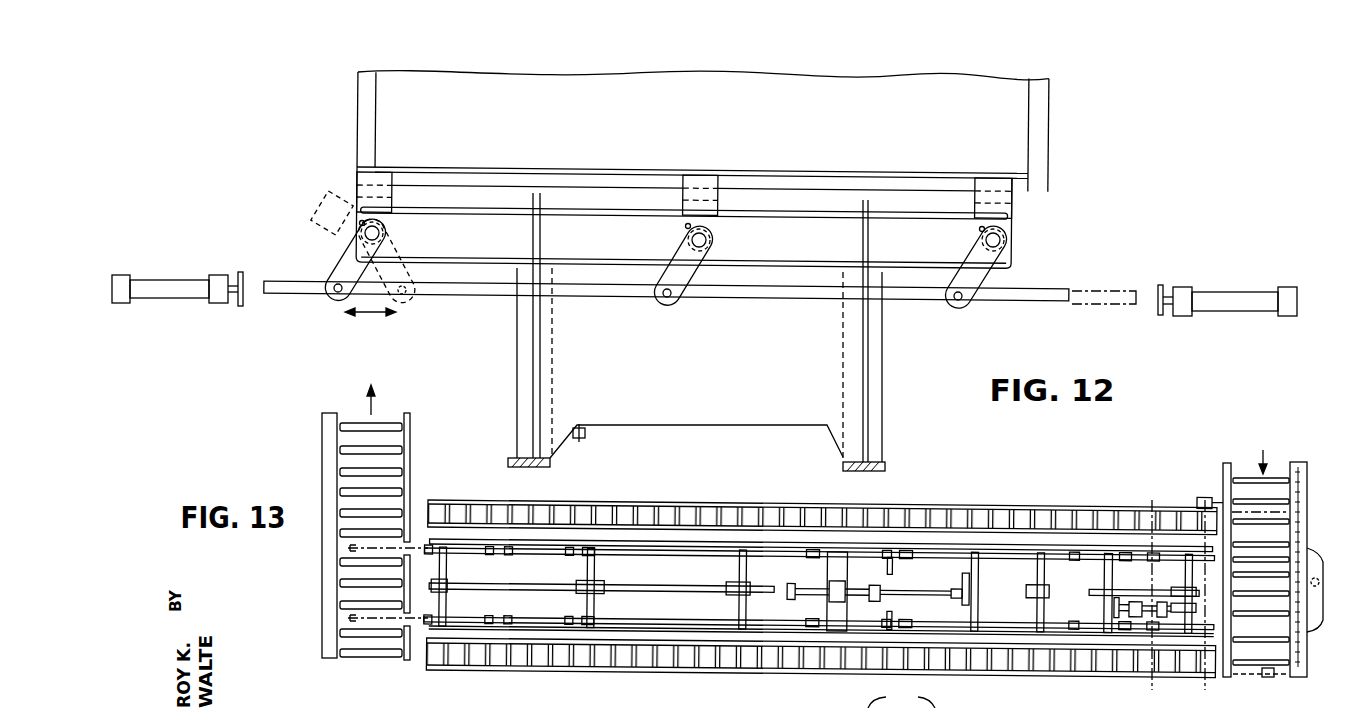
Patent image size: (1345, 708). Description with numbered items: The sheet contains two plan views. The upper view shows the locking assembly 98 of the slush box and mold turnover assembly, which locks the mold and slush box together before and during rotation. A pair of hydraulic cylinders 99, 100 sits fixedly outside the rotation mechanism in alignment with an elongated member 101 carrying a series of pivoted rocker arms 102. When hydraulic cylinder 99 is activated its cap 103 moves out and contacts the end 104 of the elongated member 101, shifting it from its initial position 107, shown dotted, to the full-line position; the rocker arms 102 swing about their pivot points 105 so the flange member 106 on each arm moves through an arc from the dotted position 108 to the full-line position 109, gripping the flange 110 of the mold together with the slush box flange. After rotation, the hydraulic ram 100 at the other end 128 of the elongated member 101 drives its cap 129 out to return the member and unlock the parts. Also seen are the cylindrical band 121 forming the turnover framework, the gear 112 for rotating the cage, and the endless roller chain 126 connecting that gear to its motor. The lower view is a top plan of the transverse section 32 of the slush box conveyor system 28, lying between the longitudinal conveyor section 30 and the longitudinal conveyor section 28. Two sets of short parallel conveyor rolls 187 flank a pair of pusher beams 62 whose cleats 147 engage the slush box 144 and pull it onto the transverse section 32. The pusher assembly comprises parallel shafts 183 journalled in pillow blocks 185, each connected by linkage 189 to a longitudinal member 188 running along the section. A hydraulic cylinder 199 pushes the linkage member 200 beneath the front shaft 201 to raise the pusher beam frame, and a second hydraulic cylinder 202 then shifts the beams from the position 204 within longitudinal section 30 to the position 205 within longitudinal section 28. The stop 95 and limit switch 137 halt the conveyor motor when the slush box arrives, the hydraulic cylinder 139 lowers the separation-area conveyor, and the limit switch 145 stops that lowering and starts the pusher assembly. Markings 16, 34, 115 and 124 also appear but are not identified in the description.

In FIG. 12, the section line 16- 16 is at (672, 195).
In FIG. 13, the slush box conveyor system 28 is at (408, 425).
In FIG. 13, the longitudinal conveyor section 30 is at (1242, 472).
In FIG. 13, the transverse conveyor section 32 is at (1008, 508).
In FIG. 13, the outlet conveyor end plate 34 is at (1277, 486).
In FIG. 13, the pusher beams 62 is at (500, 554).
In FIG. 13, the stop 95 is at (1256, 679).
In FIG. 12, the locking assembly 98 is at (1020, 231).
In FIG. 12, the hydraulic cylinder 99 is at (1232, 293).
In FIG. 12, the hydraulic cylinder 100 is at (162, 282).
In FIG. 12, the elongated member 101 is at (491, 297).
In FIG. 12, the rocker arms 102 is at (341, 268).
In FIG. 12, the cap 103 is at (1160, 316).
In FIG. 12, the end of elongated member 104 is at (1076, 298).
In FIG. 12, the pivot points 105 is at (707, 239).
In FIG. 12, the locking flange member 106 is at (393, 200).
In FIG. 12, the initial position of elongated member 107 is at (1133, 291).
In FIG. 12, the unlocked flange position 108 is at (320, 200).
In FIG. 12, the locked flange position 109 is at (385, 175).
In FIG. 12, the mold flange 110 is at (916, 186).
In FIG. 12, the gear 112 is at (359, 225).
In FIG. 12, the lower frame rail 115 is at (607, 268).
In FIG. 12, the cylindrical band 121 is at (510, 458).
In FIG. 12, the tray 124 is at (585, 432).
In FIG. 12, the endless roller chain 126 is at (586, 441).
In FIG. 12, the other end of elongated member 128 is at (266, 283).
In FIG. 12, the cap 129 is at (241, 306).
In FIG. 13, the limit switch 137 is at (1269, 678).
In FIG. 13, the hydraulic cylinder 139 is at (1292, 607).
In FIG. 13, the slush box 144 is at (901, 697).
In FIG. 13, the limit switch 145 is at (1201, 496).
In FIG. 13, the cleats 147 is at (516, 617).
In FIG. 13, the parallel shafts 183 is at (588, 569).
In FIG. 13, the pillow blocks 185 is at (746, 546).
In FIG. 13, the short parallel conveyor rolls 187 is at (527, 516).
In FIG. 13, the longitudinal member 188 is at (686, 589).
In FIG. 13, the linkage 189 is at (595, 587).
In FIG. 13, the hydraulic cylinder 199 is at (1144, 604).
In FIG. 13, the linkage member 200 is at (1190, 645).
In FIG. 13, the front shaft 201 is at (1186, 592).
In FIG. 13, the second hydraulic cylinder 202 is at (819, 591).
In FIG. 13, the pusher beam position 204 is at (1268, 559).
In FIG. 13, the pusher beam position 205 is at (348, 549).